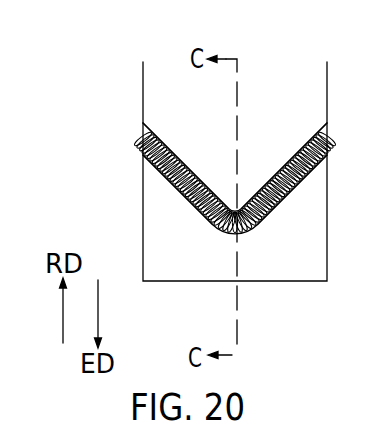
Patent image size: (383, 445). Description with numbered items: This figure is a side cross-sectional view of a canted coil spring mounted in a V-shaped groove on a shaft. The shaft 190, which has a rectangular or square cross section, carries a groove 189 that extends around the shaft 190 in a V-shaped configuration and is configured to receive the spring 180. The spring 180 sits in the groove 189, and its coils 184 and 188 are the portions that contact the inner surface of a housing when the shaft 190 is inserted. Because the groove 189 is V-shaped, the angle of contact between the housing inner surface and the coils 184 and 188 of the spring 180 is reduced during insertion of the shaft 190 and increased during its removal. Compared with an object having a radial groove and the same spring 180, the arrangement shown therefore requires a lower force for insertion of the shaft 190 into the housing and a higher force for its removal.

The spring 180 is at (268, 222).
The coil 184 is at (165, 178).
The coil 188 is at (306, 170).
The groove 189 is at (163, 175).
The shaft 190 is at (310, 268).